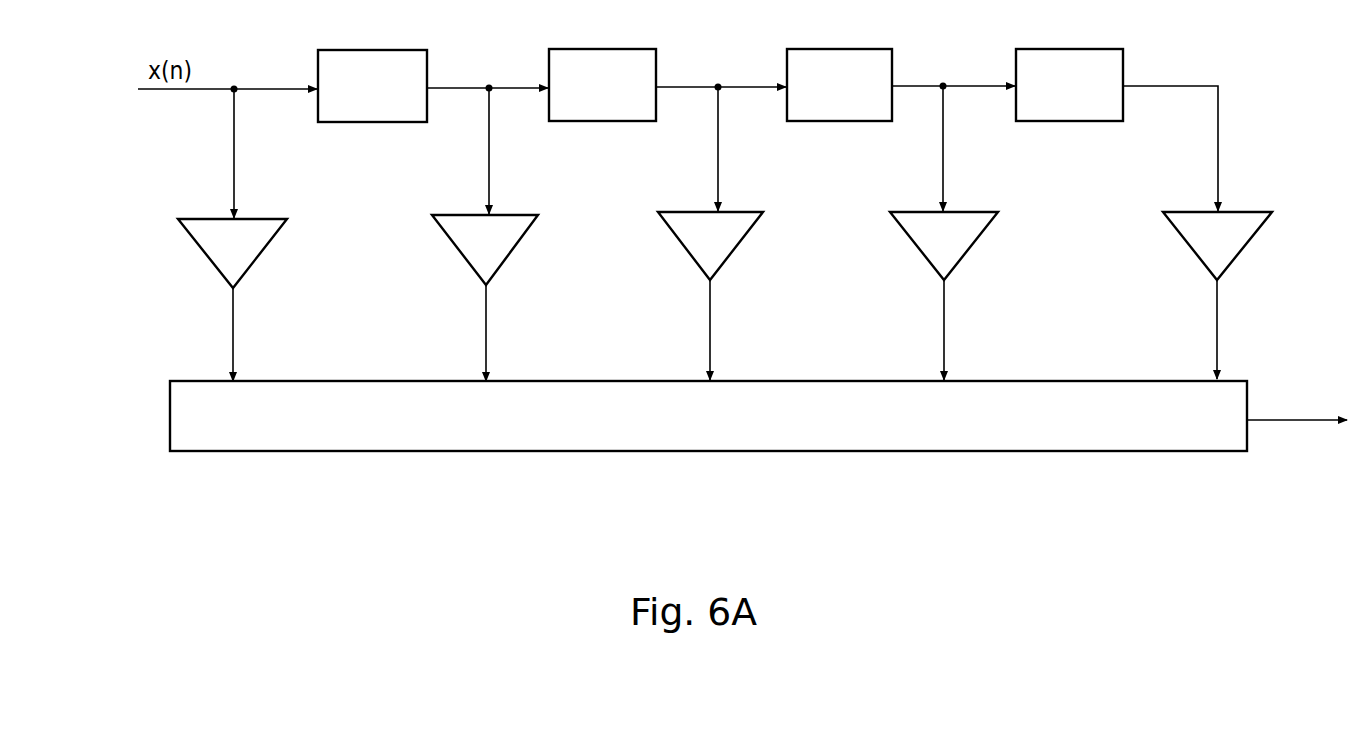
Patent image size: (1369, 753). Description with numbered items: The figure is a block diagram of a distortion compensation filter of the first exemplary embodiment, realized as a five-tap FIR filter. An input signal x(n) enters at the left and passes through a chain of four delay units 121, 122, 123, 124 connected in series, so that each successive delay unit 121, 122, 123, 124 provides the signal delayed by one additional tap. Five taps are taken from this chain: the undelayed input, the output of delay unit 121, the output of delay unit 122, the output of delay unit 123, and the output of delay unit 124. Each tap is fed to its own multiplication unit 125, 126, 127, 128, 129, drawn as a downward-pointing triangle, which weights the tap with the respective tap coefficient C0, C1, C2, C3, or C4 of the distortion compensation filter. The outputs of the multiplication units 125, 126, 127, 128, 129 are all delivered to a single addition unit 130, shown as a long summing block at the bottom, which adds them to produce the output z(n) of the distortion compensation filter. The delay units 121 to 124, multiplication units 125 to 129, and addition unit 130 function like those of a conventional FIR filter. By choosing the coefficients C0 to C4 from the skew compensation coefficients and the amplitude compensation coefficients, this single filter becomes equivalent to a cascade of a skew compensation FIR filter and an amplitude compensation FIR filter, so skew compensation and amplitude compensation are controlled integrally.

The delay unit 121 is at (378, 48).
The delay unit 122 is at (612, 47).
The delay unit 123 is at (840, 47).
The delay unit 124 is at (1068, 47).
The multiplication unit 125 is at (262, 216).
The multiplication unit 126 is at (514, 212).
The multiplication unit 127 is at (744, 209).
The multiplication unit 128 is at (972, 209).
The multiplication unit 129 is at (1246, 209).
The addition unit 130 is at (1228, 378).